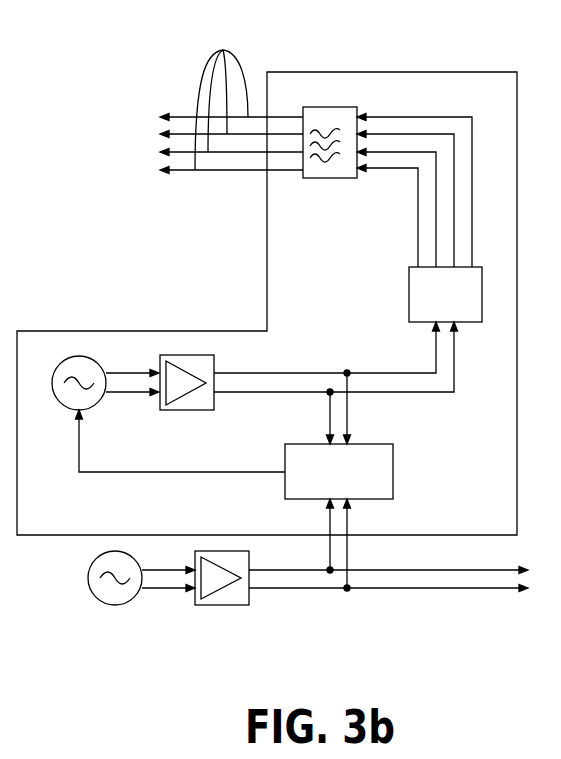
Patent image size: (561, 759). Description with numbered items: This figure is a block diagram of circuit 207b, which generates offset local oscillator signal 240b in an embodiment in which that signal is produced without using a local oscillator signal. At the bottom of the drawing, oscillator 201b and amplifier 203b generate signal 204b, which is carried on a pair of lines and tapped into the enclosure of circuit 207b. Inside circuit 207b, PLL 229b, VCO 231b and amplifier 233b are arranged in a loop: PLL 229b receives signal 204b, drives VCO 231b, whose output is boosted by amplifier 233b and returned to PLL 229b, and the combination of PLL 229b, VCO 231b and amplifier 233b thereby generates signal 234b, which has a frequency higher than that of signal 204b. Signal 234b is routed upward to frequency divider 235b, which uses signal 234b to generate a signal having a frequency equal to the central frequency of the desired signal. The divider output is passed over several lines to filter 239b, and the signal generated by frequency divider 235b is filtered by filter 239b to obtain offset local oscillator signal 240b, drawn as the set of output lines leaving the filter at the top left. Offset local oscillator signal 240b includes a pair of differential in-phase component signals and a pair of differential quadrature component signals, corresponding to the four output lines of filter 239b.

The oscillator 201b is at (93, 598).
The amplifier 203b is at (225, 600).
The signal 204b is at (347, 527).
The circuit 207b is at (276, 302).
The PLL 229b is at (385, 478).
The VCO 231b is at (95, 405).
The amplifier 233b is at (193, 405).
The signal 234b is at (440, 345).
The frequency divider 235b is at (413, 286).
The filter 239b is at (326, 174).
The offset local oscillator signal 240b is at (231, 100).